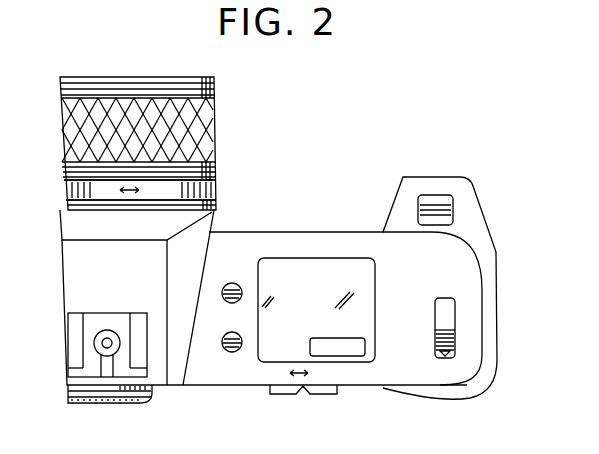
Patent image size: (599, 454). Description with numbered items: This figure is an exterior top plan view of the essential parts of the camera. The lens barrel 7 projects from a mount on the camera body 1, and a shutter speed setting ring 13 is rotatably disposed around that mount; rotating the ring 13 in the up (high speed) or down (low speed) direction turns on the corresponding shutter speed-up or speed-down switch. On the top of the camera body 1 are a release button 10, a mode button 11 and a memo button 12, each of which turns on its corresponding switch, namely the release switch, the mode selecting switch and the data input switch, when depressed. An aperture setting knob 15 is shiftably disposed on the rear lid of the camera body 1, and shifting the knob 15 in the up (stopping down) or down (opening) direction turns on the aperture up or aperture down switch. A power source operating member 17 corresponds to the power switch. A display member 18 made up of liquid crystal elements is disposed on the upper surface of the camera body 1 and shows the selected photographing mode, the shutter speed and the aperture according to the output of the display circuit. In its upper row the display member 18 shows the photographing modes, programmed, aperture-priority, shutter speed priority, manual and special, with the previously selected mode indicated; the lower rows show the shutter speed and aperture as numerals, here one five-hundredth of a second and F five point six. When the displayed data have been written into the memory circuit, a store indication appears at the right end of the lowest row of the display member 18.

The camera body 1 is at (323, 238).
The lens barrel 7 is at (213, 140).
The release button 10 is at (450, 222).
The mode button 11 is at (222, 300).
The memo button 12 is at (227, 353).
The shutter speed setting ring 13 is at (140, 200).
The aperture setting knob 15 is at (323, 394).
The power source operating member 17 is at (455, 337).
The display member 18 is at (371, 266).